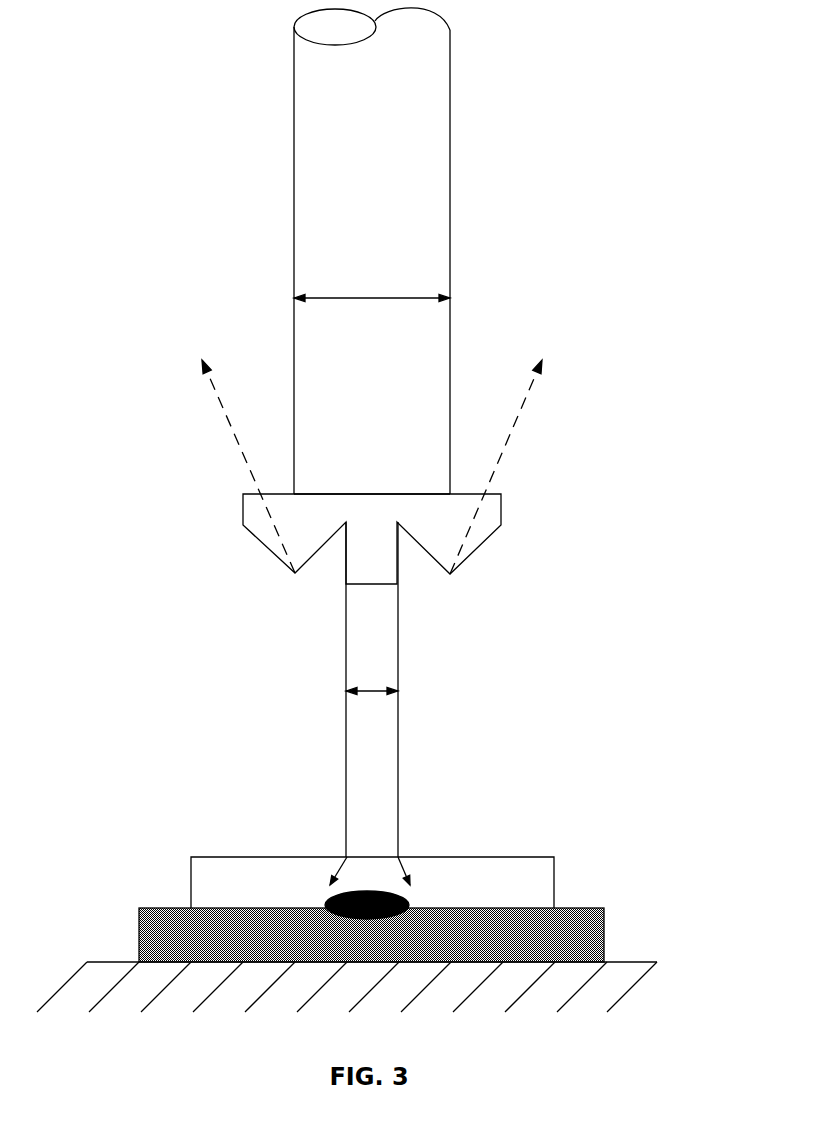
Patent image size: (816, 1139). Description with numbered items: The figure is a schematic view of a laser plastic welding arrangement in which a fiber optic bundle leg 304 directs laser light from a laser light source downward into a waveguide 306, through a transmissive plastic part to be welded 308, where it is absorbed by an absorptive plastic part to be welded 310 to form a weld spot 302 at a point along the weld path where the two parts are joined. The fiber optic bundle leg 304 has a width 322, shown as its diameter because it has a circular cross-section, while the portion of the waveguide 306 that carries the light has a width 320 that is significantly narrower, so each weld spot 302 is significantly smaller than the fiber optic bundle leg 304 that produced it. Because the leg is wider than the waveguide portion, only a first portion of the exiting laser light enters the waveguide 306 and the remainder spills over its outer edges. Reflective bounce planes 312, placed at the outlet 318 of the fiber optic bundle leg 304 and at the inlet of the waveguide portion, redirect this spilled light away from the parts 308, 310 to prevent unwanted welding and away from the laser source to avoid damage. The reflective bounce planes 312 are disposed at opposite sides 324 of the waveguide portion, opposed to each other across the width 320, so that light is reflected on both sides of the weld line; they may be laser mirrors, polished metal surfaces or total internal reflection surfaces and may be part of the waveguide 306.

The weld spot 302 is at (360, 890).
The fiber optic bundle leg 304 is at (398, 188).
The waveguide 306 is at (375, 753).
The transmissive plastic part to be welded 308 is at (492, 880).
The absorptive plastic part to be welded 310 is at (567, 940).
The reflective bounce plane 312 is at (482, 528).
The outlet 318 is at (363, 478).
The width 320 is at (370, 688).
The width 322 is at (378, 298).
The opposite sides 324 is at (346, 584).